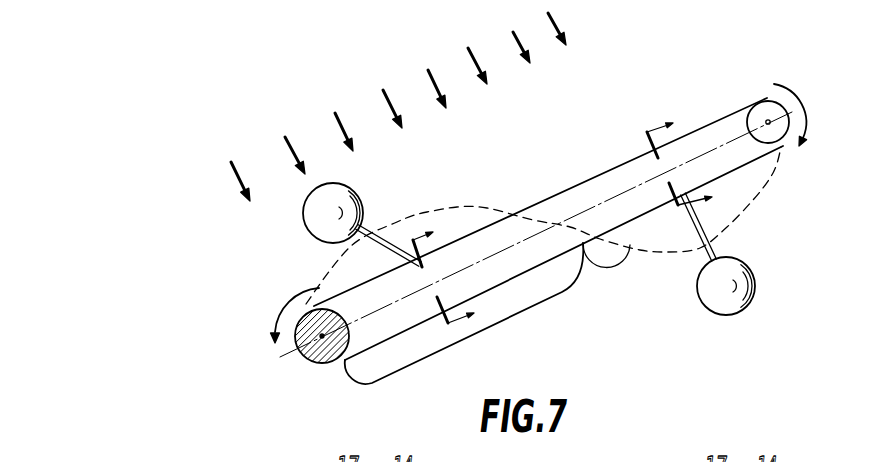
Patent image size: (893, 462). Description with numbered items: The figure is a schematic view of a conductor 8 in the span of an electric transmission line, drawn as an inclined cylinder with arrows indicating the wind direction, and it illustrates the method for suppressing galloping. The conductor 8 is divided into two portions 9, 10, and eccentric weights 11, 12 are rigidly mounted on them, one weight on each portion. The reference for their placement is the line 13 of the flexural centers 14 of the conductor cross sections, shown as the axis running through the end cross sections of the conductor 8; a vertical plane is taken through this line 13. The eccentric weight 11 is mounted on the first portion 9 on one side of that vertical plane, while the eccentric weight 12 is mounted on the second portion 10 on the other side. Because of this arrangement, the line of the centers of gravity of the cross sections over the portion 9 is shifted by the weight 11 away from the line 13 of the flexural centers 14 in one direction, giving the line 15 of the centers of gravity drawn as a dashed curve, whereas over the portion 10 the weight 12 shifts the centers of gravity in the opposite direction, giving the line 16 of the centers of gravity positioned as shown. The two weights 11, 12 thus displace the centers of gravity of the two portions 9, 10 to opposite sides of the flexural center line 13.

The conductor 8 is at (602, 170).
The first portion of the conductor 9 is at (481, 330).
The second portion of the conductor 10 is at (697, 228).
The eccentric weight 11 is at (357, 193).
The eccentric weight 12 is at (754, 289).
The line of the flexural centers 13 is at (726, 141).
The flexural centers 14 is at (768, 121).
The line of the centers of gravity 15 is at (497, 207).
The line of the centers of gravity 16 is at (631, 250).